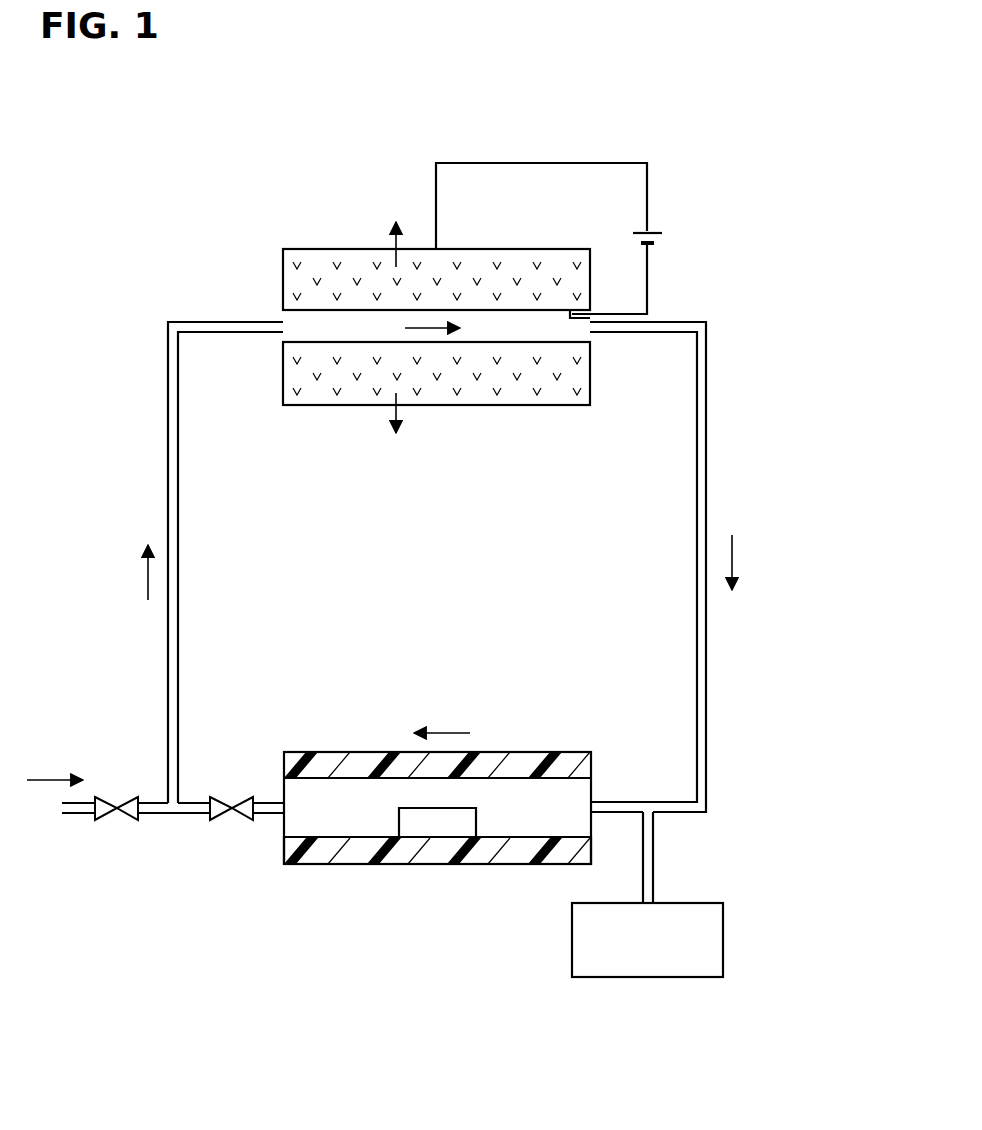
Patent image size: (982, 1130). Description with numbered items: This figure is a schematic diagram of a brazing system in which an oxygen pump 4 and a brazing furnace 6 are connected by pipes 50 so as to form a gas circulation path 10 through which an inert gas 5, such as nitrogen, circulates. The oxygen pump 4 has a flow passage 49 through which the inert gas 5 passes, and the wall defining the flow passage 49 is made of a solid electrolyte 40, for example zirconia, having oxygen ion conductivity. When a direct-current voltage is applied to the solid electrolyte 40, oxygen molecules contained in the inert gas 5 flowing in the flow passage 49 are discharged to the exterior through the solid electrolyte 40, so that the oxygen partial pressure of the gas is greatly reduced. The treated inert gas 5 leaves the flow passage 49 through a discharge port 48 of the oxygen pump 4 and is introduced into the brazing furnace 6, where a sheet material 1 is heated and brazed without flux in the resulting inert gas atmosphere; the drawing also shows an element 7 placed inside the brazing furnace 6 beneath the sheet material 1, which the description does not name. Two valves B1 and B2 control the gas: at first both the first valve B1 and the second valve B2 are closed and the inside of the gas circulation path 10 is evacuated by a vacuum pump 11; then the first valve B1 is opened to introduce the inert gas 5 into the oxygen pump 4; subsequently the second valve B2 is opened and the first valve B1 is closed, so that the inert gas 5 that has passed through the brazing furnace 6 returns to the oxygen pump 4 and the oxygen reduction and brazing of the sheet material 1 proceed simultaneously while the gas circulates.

The sheet material 1 is at (484, 851).
The oxygen pump 4 is at (416, 303).
The inert gas 5 is at (175, 667).
The brazing furnace 6 is at (350, 866).
The sample / substrate 7 is at (418, 823).
The gas circulation path 10 is at (688, 240).
The vacuum pump 11 is at (658, 977).
The solid electrolyte 40 is at (315, 270).
The discharge port 48 is at (592, 342).
The flow passage 49 is at (355, 322).
The pipes 50 is at (168, 472).
The first valve B1 is at (100, 808).
The second valve B2 is at (245, 812).